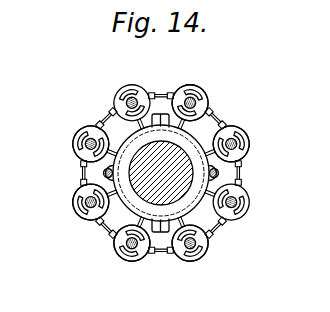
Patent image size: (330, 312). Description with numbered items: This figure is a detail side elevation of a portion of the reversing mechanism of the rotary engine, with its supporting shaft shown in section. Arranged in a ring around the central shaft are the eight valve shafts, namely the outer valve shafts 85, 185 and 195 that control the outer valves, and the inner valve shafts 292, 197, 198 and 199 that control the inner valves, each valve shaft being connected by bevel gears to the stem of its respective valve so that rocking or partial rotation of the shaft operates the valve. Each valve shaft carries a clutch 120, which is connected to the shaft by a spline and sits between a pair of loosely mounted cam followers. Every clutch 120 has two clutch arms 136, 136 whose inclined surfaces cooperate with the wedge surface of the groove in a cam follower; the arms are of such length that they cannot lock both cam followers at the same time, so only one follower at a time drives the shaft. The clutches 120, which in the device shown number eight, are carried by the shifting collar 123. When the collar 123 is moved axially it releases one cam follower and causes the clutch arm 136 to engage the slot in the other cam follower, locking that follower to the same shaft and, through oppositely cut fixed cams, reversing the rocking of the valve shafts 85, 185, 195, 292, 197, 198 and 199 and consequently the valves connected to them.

The clutch 120 is at (95, 126).
The clutch arms 136 is at (120, 97).
The valve shaft 199 is at (116, 96).
The valve shaft 185 is at (245, 194).
The valve shaft 292 is at (194, 87).
The valve shaft 195 is at (250, 141).
The valve shaft 85 is at (73, 144).
The valve shaft 197 is at (209, 241).
The valve shaft 198 is at (130, 261).
The shifting collar 123 is at (196, 208).